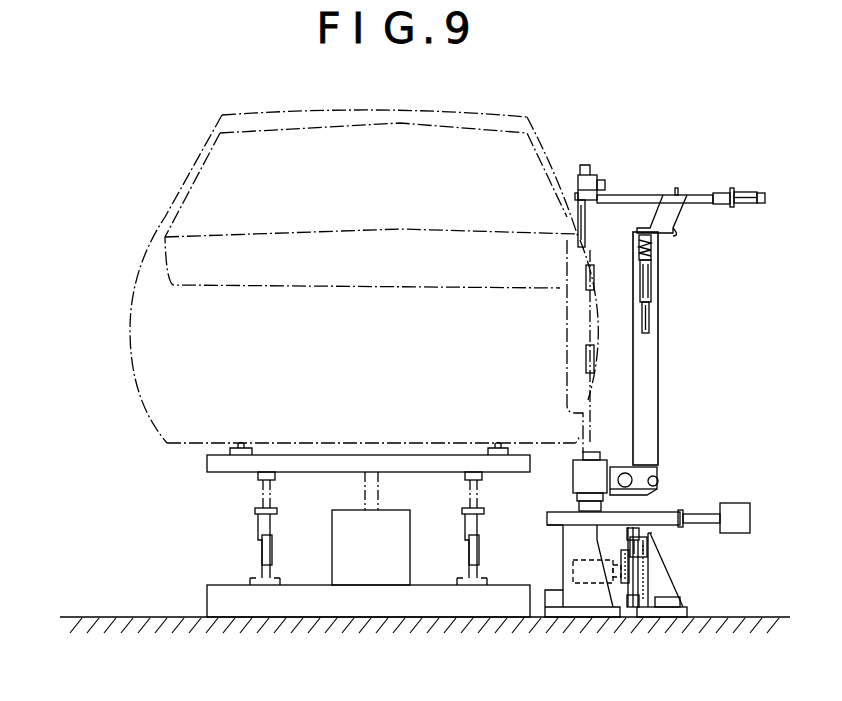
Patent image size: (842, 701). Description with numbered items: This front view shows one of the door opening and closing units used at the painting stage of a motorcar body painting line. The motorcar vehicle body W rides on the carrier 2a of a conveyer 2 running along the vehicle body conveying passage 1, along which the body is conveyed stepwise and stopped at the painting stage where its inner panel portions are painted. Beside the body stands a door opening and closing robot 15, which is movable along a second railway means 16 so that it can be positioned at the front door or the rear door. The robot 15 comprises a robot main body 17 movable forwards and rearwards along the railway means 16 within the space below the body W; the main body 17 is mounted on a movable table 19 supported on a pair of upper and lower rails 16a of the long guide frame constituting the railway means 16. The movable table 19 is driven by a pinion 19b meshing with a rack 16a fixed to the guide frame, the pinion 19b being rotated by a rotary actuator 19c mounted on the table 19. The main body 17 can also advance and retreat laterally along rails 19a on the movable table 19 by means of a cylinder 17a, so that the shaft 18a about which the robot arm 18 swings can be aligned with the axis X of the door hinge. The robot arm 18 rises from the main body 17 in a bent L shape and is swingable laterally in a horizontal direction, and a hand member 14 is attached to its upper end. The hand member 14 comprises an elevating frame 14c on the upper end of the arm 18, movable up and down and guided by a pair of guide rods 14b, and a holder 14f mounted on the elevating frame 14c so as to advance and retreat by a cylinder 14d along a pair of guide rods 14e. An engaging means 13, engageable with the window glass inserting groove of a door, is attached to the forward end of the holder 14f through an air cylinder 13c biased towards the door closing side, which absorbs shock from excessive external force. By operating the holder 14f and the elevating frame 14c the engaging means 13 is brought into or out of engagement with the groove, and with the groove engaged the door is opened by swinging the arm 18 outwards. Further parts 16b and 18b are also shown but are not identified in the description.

The vehicle body conveying passage 1 is at (288, 567).
The conveyer 2 is at (338, 522).
The carrier 2a is at (230, 472).
The engaging means 13 is at (578, 242).
The air cylinder 13c is at (592, 175).
The hand member 14 is at (689, 178).
The guide rods 14b is at (652, 311).
The elevating frame 14c is at (677, 237).
The cylinder 14d is at (750, 203).
The guide rods 14e is at (638, 195).
The holder 14f is at (582, 170).
The door opening and closing robot 15 is at (661, 398).
The second railway means 16 is at (656, 579).
The upper and lower rails 16a is at (627, 530).
The slider 16b is at (647, 544).
The robot main body 17 is at (576, 500).
The cylinder 17a is at (750, 506).
The robot arm 18 is at (657, 422).
The shaft 18a is at (583, 455).
The bearing block 18b is at (620, 481).
The movable table 19 is at (620, 602).
The rails 19a is at (553, 512).
The pinion 19b is at (630, 577).
The rotary actuator 19c is at (583, 592).
The motorcar vehicle body W is at (349, 358).
The axis of the door hinge X is at (588, 320).